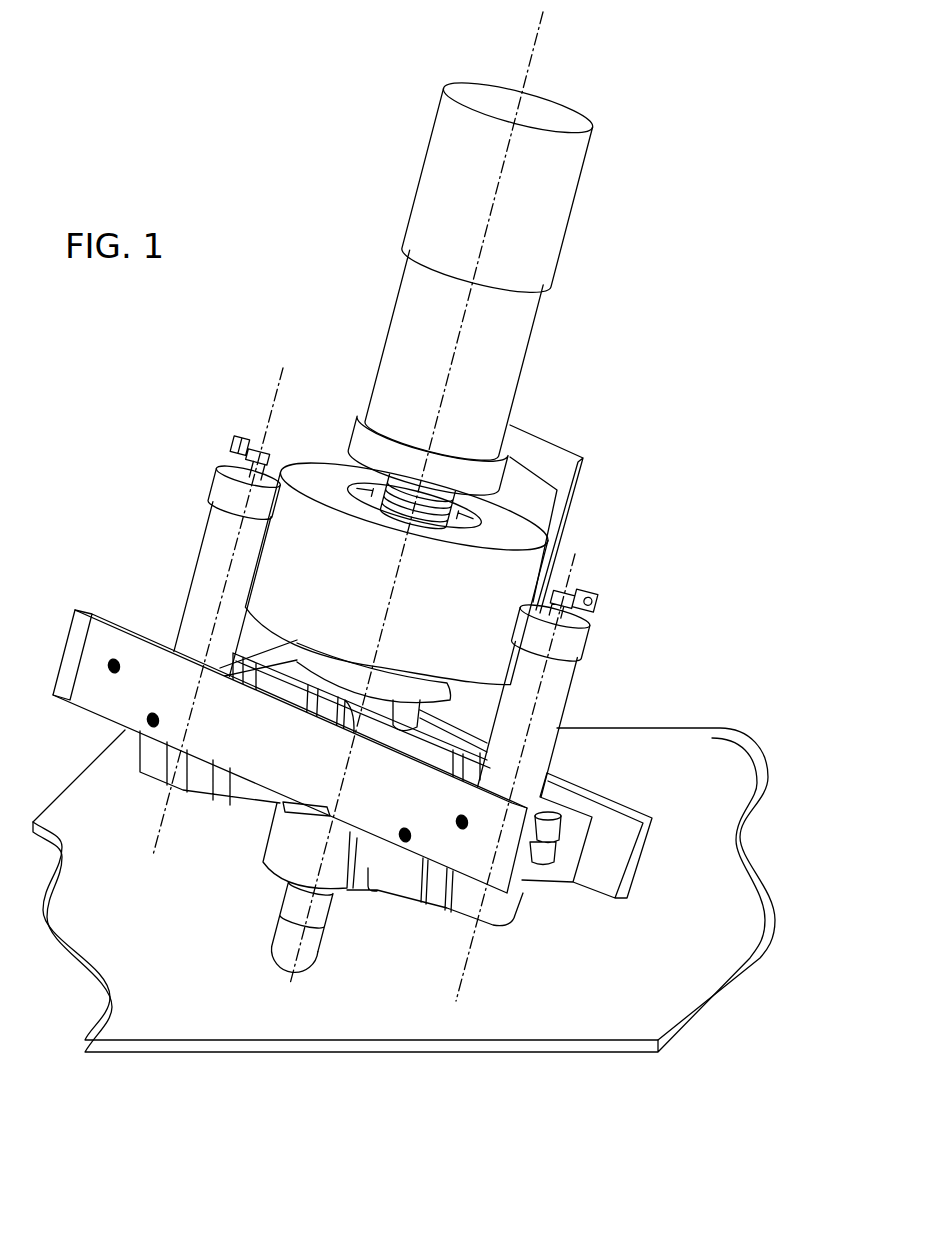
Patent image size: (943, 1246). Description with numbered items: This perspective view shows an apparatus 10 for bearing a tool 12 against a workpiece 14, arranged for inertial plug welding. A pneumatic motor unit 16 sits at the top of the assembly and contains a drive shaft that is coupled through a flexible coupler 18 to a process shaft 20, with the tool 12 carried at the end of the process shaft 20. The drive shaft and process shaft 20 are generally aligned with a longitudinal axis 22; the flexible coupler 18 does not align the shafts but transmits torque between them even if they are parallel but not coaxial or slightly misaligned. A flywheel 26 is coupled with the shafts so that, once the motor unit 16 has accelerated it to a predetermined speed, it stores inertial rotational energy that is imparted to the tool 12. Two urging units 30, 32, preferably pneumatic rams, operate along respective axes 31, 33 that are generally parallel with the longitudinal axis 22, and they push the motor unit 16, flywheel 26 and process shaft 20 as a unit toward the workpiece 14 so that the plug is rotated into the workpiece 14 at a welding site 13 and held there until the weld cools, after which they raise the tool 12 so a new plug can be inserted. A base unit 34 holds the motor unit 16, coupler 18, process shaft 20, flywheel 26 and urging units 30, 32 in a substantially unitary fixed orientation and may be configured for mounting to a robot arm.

The apparatus 10 is at (735, 643).
The tool 12 is at (293, 959).
The welding site 13 is at (270, 983).
The workpiece 14 is at (500, 1054).
The pneumatic motor unit 16 is at (470, 289).
The flexible coupler 18 is at (397, 574).
The process shaft 20 is at (302, 920).
The longitudinal axis 22 is at (541, 42).
The flywheel 26 is at (527, 540).
The urging unit 30 is at (227, 555).
The axis 31 is at (280, 378).
The urging unit 32 is at (536, 690).
The axis 33 is at (573, 556).
The base unit 34 is at (630, 892).